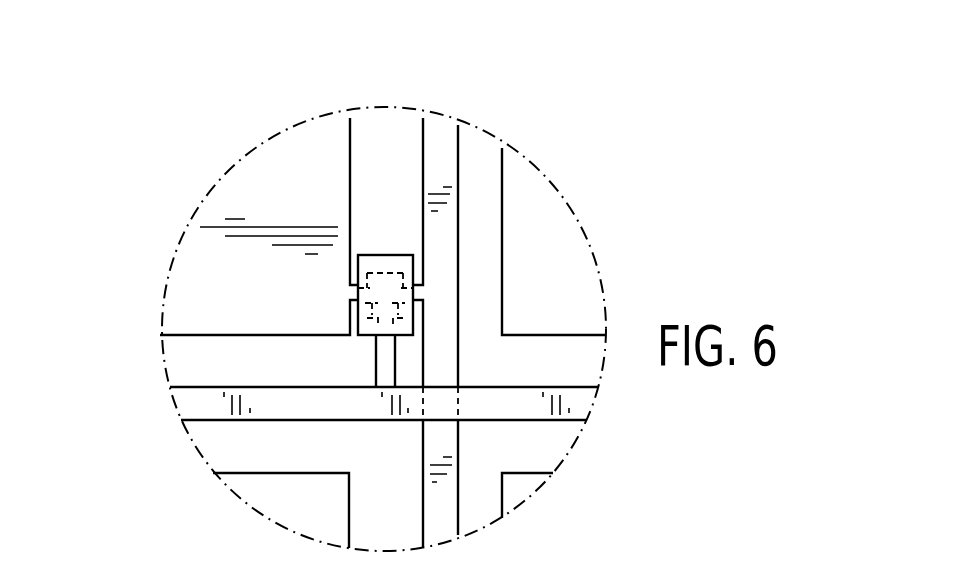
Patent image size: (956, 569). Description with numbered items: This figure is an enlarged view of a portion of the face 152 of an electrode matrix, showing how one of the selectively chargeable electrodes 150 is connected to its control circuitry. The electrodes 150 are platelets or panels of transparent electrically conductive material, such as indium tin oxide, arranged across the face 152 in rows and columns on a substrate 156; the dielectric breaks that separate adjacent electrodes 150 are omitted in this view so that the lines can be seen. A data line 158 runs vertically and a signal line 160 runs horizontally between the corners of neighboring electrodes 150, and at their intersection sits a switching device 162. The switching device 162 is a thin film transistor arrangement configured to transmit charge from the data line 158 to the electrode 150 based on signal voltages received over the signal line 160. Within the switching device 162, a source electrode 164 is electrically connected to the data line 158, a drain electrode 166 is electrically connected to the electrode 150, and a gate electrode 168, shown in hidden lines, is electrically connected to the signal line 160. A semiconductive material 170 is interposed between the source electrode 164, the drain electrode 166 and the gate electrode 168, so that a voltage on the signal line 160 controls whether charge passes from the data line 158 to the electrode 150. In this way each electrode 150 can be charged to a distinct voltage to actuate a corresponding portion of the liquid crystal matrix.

The electrode 150 is at (316, 196).
The face 152 is at (180, 138).
The substrate 156 is at (178, 358).
The data line 158 is at (441, 135).
The signal line 160 is at (180, 403).
The switching device 162 is at (385, 248).
The source electrode 164 is at (413, 290).
The drain electrode 166 is at (358, 290).
The gate electrode 168 is at (413, 307).
The semiconductive material 170 is at (408, 254).